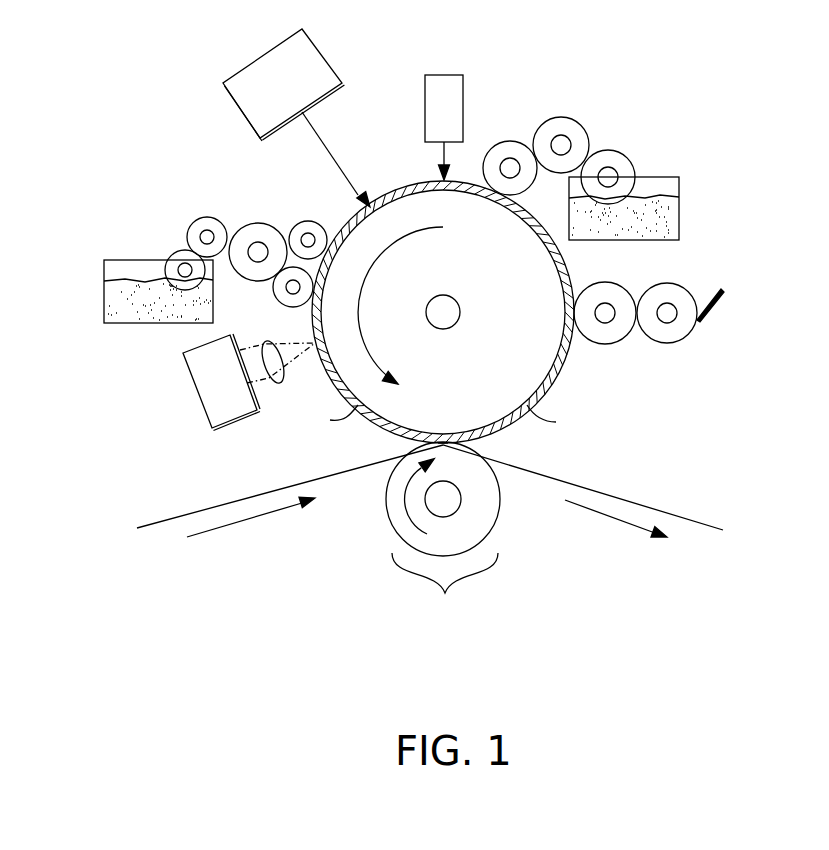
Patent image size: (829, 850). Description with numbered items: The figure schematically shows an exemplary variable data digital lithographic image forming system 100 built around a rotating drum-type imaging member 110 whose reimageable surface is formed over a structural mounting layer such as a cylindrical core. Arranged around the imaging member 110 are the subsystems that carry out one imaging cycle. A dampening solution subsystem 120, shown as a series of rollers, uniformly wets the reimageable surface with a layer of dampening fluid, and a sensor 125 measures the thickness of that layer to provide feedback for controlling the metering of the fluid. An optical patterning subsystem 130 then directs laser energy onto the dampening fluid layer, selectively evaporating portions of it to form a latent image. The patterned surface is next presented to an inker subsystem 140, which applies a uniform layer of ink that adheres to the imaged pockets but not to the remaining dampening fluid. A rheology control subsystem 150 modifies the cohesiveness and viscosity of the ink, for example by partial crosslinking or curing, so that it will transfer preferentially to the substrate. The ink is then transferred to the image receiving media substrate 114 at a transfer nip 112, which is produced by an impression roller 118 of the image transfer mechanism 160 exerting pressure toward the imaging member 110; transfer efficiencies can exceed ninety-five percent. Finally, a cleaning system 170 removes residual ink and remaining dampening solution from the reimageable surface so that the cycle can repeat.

The system 100 is at (118, 103).
The imaging member 110 is at (568, 358).
The transfer nip 112 is at (447, 428).
The image receiving media substrate 114 is at (160, 521).
The impression roller 118 is at (501, 512).
The dampening solution subsystem 120 is at (710, 187).
The sensor 125 is at (445, 72).
The optical patterning subsystem 130 is at (327, 53).
The inker subsystem 140 is at (92, 215).
The rheology control subsystem 150 is at (172, 343).
The image transfer mechanism 160 is at (445, 591).
The cleaning system 170 is at (723, 258).